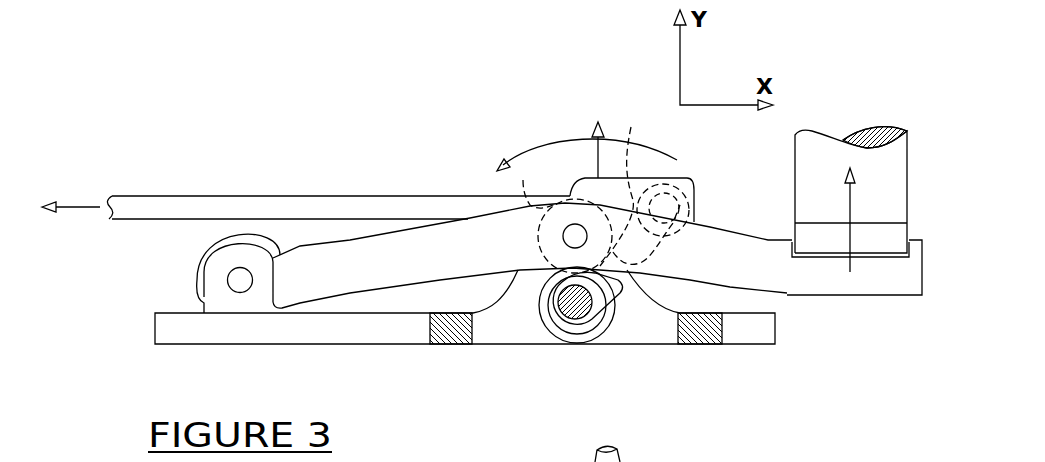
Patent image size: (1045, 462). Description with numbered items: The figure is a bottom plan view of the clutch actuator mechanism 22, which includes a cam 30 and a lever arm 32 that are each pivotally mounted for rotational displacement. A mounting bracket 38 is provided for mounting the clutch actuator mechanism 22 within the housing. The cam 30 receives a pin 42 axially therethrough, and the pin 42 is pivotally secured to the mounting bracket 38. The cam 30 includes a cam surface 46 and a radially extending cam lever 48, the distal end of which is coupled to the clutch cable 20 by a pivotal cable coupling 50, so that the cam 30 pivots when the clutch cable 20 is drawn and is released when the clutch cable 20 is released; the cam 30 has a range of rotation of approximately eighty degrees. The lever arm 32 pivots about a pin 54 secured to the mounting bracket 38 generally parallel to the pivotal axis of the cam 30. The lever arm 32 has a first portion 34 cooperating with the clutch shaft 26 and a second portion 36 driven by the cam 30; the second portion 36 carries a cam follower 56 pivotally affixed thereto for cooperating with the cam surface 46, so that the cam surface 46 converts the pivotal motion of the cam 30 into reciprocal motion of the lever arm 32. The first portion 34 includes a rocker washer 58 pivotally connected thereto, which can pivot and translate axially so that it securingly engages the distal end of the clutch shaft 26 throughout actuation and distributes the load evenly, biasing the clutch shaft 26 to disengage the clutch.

The clutch cable 20 is at (208, 195).
The clutch actuator mechanism 22 is at (392, 138).
The clutch shaft 26 is at (795, 197).
The cam 30 is at (608, 330).
The lever arm 32 is at (378, 234).
The first portion 34 is at (818, 297).
The second portion 36 is at (537, 275).
The mounting bracket 38 is at (178, 347).
The pin 42 is at (578, 320).
The cam surface 46 is at (548, 306).
The cam lever 48 is at (609, 187).
The pivotal cable coupling 50 is at (695, 191).
The pin 54 is at (238, 293).
The cam follower 56 is at (533, 175).
The rocker washer 58 is at (893, 258).